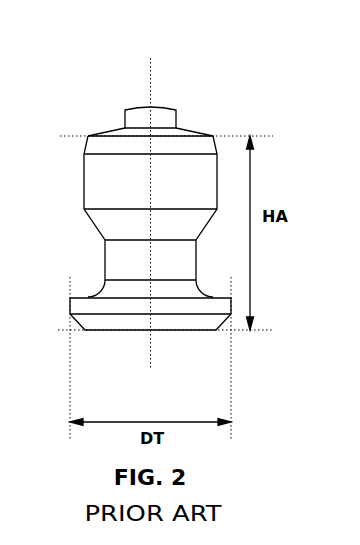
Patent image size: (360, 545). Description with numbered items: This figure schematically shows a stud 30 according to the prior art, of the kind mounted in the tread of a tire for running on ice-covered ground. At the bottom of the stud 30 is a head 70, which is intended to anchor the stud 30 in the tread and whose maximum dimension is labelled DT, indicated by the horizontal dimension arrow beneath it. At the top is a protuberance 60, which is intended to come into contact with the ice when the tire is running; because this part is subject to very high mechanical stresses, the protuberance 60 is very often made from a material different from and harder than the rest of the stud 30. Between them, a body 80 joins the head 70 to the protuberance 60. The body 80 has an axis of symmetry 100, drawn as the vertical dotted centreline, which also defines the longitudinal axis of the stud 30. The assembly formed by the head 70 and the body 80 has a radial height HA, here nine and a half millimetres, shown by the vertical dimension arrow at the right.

The stud 30 is at (74, 99).
The axis of symmetry 100 is at (149, 205).
The protuberance 60 is at (162, 112).
The body 80 is at (117, 222).
The head 70 is at (88, 306).